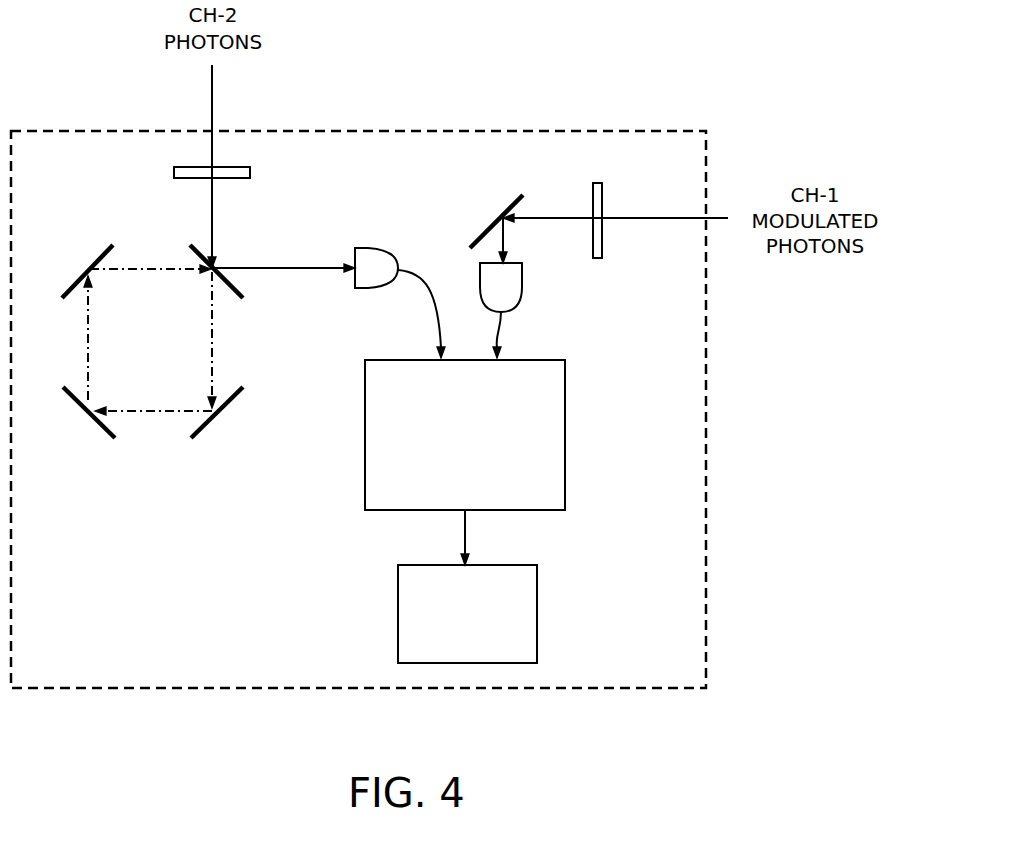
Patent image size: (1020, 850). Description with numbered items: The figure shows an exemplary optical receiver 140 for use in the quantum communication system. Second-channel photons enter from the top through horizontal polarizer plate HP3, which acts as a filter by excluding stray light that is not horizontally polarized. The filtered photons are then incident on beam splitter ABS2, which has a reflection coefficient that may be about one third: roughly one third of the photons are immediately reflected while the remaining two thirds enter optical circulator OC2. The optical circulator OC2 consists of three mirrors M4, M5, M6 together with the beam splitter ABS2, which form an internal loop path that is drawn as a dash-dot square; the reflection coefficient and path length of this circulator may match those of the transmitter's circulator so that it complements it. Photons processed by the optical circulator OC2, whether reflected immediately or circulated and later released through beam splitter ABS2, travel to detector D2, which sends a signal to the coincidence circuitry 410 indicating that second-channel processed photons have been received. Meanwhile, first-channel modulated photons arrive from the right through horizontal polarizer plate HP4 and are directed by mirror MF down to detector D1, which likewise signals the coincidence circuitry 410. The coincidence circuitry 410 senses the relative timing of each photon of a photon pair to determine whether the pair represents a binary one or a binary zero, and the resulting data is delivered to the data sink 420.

The optical receiver 140 is at (681, 672).
The horizontal polarizer plate HP3 is at (242, 175).
The horizontal polarizer plate HP4 is at (598, 205).
The mirror M4 is at (237, 397).
The mirror M5 is at (105, 435).
The mirror M6 is at (98, 257).
The mirror MF is at (516, 203).
The beam splitter ABS2 is at (238, 295).
The optical circulator OC2 is at (145, 465).
The detector D1 is at (501, 287).
The detector D2 is at (376, 268).
The coincidence circuitry 410 is at (446, 491).
The data sink 420 is at (486, 642).